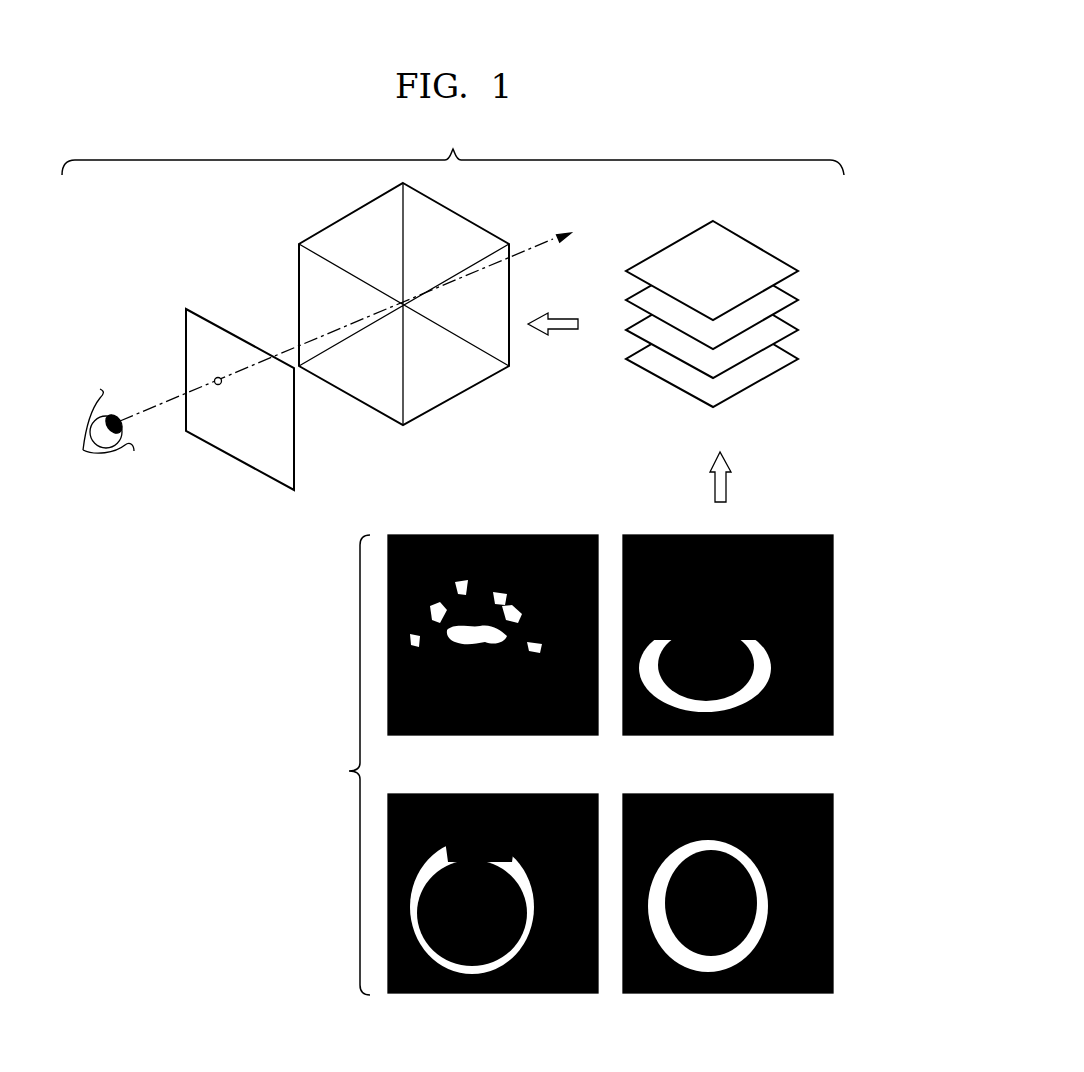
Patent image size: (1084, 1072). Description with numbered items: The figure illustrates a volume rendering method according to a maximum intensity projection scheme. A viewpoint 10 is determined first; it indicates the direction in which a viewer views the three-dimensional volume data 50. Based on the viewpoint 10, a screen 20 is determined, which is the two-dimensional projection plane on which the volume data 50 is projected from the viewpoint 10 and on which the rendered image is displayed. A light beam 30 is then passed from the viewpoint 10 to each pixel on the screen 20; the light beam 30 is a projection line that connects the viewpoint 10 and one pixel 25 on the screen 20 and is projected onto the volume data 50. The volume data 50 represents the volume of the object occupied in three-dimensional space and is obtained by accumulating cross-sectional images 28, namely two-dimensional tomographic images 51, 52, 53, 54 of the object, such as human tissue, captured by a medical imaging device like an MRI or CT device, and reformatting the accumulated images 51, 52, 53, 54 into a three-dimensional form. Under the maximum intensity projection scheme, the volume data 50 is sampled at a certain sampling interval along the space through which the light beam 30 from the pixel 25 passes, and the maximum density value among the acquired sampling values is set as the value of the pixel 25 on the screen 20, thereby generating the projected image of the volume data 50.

The viewpoint 10 is at (90, 414).
The screen 20 is at (258, 457).
The pixel 25 is at (220, 376).
The light beam 30 is at (523, 252).
The volume data 50 is at (448, 382).
The 2D tomographic image 51 is at (788, 264).
The 2D tomographic image 52 is at (788, 293).
The 2D tomographic image 53 is at (788, 323).
The 2D tomographic image 54 is at (788, 353).
The cross-sectional images 28 is at (344, 765).